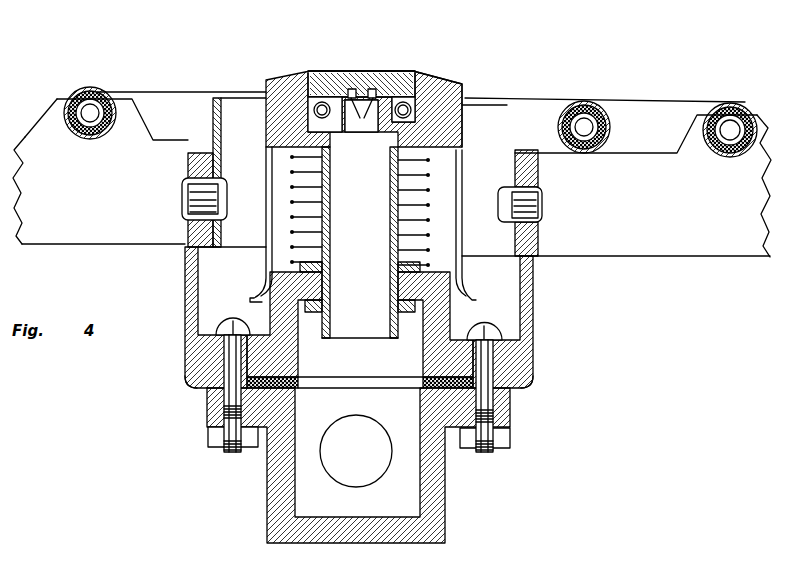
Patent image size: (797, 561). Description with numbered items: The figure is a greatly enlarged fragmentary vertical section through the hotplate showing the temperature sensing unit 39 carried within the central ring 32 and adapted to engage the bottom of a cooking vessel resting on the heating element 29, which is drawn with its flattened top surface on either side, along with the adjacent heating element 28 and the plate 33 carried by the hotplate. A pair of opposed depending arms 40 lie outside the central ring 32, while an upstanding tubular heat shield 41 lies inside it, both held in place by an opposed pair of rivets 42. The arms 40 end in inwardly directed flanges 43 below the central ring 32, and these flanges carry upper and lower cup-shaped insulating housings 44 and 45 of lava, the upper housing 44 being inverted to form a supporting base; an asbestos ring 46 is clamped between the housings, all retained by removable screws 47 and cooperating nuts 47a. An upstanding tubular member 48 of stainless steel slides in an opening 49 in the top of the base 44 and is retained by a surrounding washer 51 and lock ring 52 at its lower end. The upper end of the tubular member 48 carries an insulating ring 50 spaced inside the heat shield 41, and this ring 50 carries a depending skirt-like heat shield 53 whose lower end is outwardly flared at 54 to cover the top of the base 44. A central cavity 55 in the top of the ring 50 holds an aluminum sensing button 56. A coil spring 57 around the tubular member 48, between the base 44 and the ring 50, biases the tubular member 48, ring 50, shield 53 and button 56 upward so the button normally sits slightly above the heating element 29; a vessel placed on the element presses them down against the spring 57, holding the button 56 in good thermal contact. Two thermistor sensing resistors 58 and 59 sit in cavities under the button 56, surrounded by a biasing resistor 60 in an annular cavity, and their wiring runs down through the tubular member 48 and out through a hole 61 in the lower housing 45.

The roller 28 is at (681, 131).
The heating element 29 is at (88, 88).
The central ring 32 is at (207, 155).
The carriage plates 33 is at (41, 187).
The temperature sensing unit 39 is at (309, 66).
The depending arms 40 is at (187, 316).
The tubular heat shield 41 is at (217, 100).
The rivets 42 is at (184, 195).
The inwardly directed flanges 43 is at (193, 387).
The upper insulating housing 44 is at (423, 364).
The lower insulating housing 45 is at (443, 505).
The asbestos ring 46 is at (377, 381).
The removable screws 47 is at (231, 320).
The nuts 47a is at (211, 440).
The tubular member 48 is at (331, 207).
The opening 49 is at (318, 266).
The insulating ring 50 is at (437, 80).
The washer 51 is at (400, 308).
The lock ring 52 is at (320, 312).
The depending tubular heat shield 53 is at (266, 190).
The outwardly flared lower end 54 is at (464, 300).
The central cavity 55 is at (316, 66).
The sensing button 56 is at (376, 72).
The coil spring 57 is at (430, 183).
The temperature sensing resistor 58 is at (352, 90).
The temperature sensing resistor 59 is at (398, 72).
The biasing resistor 60 is at (412, 110).
The hole 61 is at (341, 473).